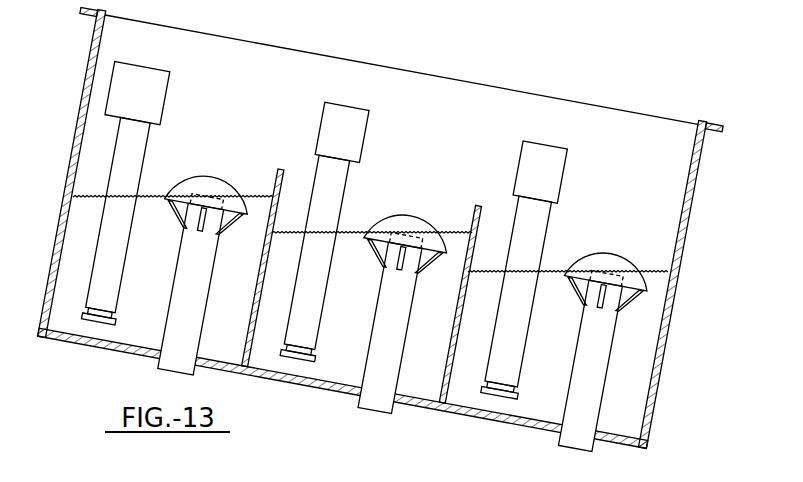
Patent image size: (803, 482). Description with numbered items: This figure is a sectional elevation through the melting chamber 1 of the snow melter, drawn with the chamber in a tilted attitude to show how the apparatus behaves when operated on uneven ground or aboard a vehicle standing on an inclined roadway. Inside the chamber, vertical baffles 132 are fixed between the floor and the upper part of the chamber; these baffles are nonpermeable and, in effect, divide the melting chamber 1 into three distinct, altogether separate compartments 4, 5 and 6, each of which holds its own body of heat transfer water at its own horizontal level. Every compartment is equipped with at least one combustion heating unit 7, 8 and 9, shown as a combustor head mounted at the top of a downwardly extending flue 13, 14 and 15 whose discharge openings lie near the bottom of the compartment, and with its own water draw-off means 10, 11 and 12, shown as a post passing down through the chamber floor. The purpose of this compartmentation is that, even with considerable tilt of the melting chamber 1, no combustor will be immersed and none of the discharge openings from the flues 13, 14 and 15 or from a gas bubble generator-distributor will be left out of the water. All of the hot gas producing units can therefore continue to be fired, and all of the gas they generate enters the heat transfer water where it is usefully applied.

The melting chamber 1 is at (90, 355).
The compartment 4 is at (173, 254).
The compartment 5 is at (372, 298).
The compartment 6 is at (568, 337).
The combustion heating unit 7 is at (137, 93).
The combustion heating unit 8 is at (342, 132).
The combustion heating unit 9 is at (540, 172).
The water draw-off means 10 is at (193, 274).
The water draw-off means 11 is at (392, 313).
The water draw-off means 12 is at (593, 351).
The flue 13 is at (117, 221).
The flue 14 is at (315, 258).
The flue 15 is at (517, 297).
The vertical baffles 132 is at (280, 167).